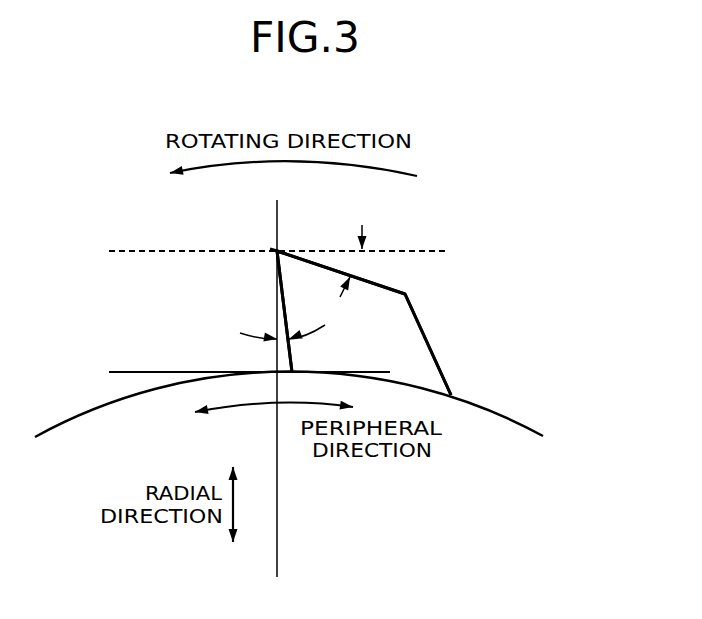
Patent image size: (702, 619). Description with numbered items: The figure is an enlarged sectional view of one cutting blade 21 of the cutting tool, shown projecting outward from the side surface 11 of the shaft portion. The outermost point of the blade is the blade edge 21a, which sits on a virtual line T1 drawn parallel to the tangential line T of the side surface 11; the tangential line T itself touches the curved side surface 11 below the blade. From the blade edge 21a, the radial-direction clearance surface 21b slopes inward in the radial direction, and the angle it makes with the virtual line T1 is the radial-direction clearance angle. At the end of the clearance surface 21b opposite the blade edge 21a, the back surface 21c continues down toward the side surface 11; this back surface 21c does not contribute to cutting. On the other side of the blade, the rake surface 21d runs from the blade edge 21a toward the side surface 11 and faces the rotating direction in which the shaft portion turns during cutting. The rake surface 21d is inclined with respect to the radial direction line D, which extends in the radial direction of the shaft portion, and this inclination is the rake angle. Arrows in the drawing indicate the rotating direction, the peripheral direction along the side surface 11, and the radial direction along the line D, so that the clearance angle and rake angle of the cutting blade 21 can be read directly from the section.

The side surface 11 is at (510, 418).
The cutting blade 21 is at (351, 299).
The blade edge 21a is at (272, 249).
The radial-direction clearance surface 21b is at (328, 268).
The back surface 21c is at (433, 348).
The rake surface 21d is at (282, 313).
The virtual line T1 is at (139, 250).
The tangential line T is at (139, 372).
The radial direction line D is at (278, 537).